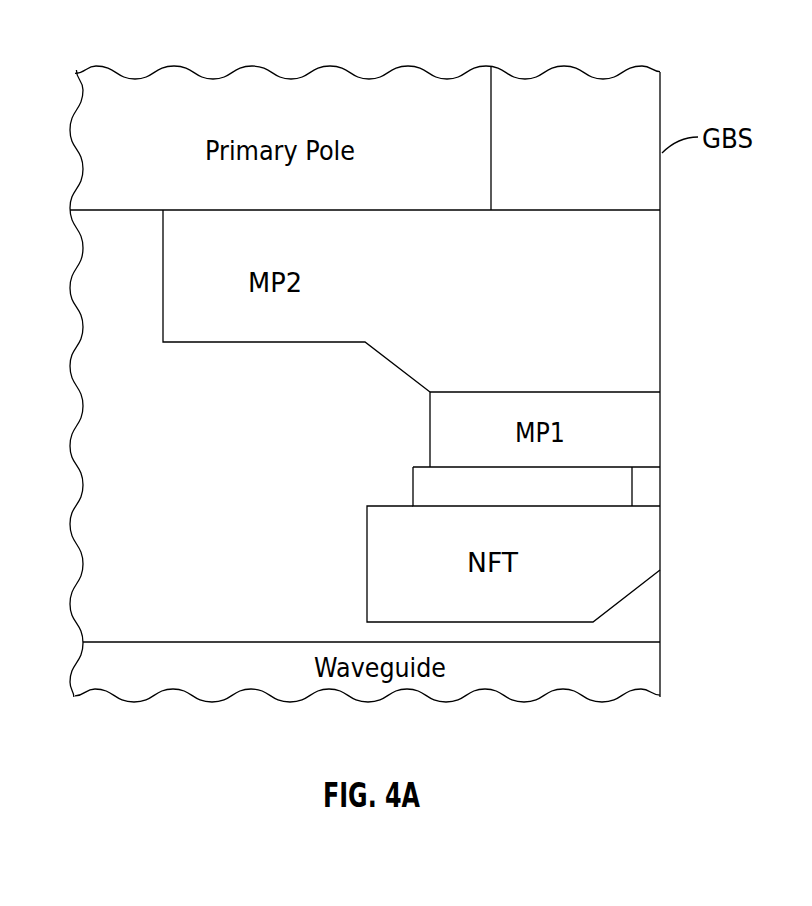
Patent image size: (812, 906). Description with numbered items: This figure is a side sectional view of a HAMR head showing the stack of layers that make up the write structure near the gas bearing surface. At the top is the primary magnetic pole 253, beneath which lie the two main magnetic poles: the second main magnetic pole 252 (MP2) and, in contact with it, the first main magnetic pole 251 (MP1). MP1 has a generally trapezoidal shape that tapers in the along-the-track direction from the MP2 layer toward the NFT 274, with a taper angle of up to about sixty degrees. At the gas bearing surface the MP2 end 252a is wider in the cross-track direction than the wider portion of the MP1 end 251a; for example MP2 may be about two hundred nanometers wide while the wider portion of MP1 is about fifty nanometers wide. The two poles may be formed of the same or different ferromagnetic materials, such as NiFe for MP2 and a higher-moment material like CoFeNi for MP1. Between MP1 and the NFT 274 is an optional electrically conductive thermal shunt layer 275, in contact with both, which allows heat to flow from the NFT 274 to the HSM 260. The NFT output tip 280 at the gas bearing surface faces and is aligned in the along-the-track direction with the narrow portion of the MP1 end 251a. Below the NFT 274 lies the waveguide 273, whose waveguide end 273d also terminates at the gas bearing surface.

The primary magnetic pole 253 is at (175, 78).
The second main magnetic pole 252 is at (400, 355).
The MP2 end 252a is at (662, 298).
The first main magnetic pole 251 is at (440, 425).
The MP1 end 251a is at (662, 432).
The HSM 260 is at (811, 391).
The thermal shunt layer 275 is at (620, 490).
The NFT 274 is at (385, 547).
The NFT output tip 280 is at (662, 553).
The waveguide end 273d is at (662, 675).
The waveguide 273 is at (215, 690).